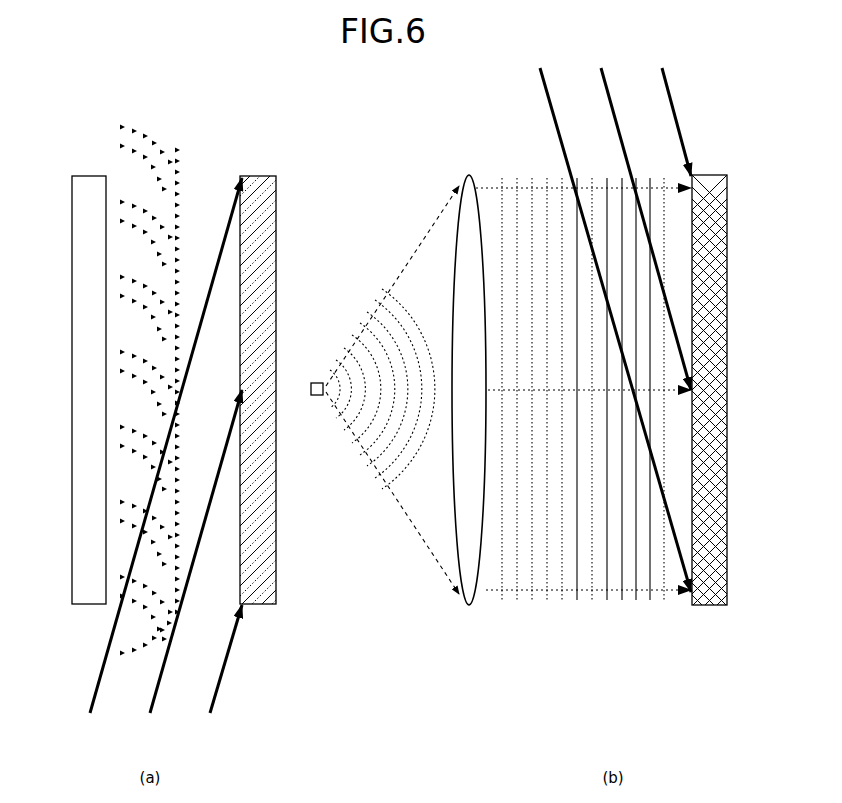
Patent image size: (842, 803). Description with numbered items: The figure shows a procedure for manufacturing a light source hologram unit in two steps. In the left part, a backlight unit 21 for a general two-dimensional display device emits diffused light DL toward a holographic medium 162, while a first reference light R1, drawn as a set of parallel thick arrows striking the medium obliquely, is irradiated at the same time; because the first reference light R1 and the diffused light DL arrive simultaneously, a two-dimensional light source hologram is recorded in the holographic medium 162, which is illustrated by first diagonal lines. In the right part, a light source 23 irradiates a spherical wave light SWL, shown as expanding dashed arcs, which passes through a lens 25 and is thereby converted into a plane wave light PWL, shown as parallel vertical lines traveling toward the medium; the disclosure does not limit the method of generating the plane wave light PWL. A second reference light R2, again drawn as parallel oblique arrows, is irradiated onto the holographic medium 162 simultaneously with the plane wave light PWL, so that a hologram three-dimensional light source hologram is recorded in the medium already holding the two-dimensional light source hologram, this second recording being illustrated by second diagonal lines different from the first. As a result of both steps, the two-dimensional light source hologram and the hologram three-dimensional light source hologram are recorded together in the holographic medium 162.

The BLU (backlight unit) 21 is at (90, 174).
The holographic medium 162 is at (258, 174).
The light source 23 is at (317, 380).
The lens 25 is at (469, 172).
The diffused light DL is at (141, 125).
The spherical wave light SWL is at (393, 292).
The plane wave light PWL is at (493, 600).
The first reference light R1 is at (90, 717).
The second reference light R2 is at (540, 60).